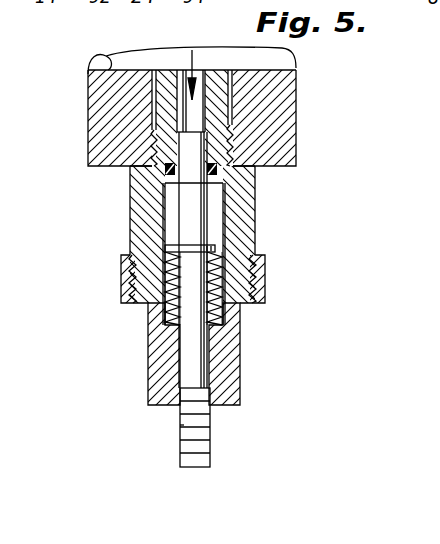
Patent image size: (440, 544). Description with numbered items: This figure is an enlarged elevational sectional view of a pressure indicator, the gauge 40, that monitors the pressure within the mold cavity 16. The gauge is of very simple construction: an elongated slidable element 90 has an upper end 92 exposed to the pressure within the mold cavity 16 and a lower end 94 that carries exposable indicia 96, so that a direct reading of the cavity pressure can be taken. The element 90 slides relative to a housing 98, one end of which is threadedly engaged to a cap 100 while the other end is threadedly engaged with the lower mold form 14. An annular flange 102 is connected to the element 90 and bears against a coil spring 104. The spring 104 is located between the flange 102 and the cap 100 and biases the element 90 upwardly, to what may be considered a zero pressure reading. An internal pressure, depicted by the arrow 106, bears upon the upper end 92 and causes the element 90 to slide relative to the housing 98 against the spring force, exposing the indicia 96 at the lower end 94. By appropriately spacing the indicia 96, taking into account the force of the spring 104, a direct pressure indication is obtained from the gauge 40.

The lower mold form 14 is at (104, 112).
The mold cavity 16 is at (94, 62).
The gauge 40 is at (135, 311).
The elongated slidable element 90 is at (200, 208).
The upper end 92 is at (196, 132).
The lower end 94 is at (210, 434).
The exposable indicia 96 is at (182, 425).
The housing 98 is at (140, 193).
The cap 100 is at (163, 283).
The annular flange 102 is at (222, 246).
The coil spring 104 is at (218, 318).
The arrow 106 is at (192, 50).